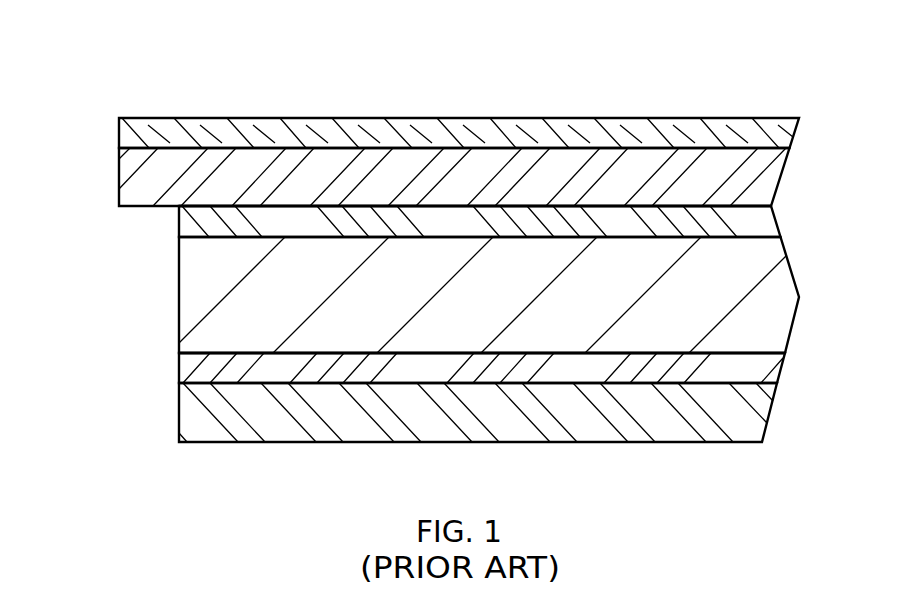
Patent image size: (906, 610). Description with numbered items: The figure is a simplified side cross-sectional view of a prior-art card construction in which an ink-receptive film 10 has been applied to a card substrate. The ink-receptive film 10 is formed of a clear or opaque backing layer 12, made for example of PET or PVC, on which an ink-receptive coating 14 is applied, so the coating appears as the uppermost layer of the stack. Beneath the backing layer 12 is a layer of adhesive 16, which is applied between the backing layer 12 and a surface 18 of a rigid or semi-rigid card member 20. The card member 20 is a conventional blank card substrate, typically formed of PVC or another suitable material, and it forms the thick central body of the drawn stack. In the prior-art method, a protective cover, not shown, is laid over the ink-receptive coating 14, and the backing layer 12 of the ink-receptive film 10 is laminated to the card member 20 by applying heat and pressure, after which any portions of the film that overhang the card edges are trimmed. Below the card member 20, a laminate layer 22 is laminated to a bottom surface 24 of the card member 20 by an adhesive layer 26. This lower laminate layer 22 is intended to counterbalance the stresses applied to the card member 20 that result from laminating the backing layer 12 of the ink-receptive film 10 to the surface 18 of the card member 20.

The ink-receptive film 10 is at (118, 88).
The backing layer 12 is at (767, 172).
The ink-receptive coating 14 is at (697, 125).
The layer of adhesive 16 is at (767, 218).
The surface of the card member 18 is at (214, 224).
The card member 20 is at (760, 291).
The laminate layer 22 is at (750, 420).
The bottom surface of the card member 24 is at (212, 366).
The adhesive layer 26 is at (765, 372).